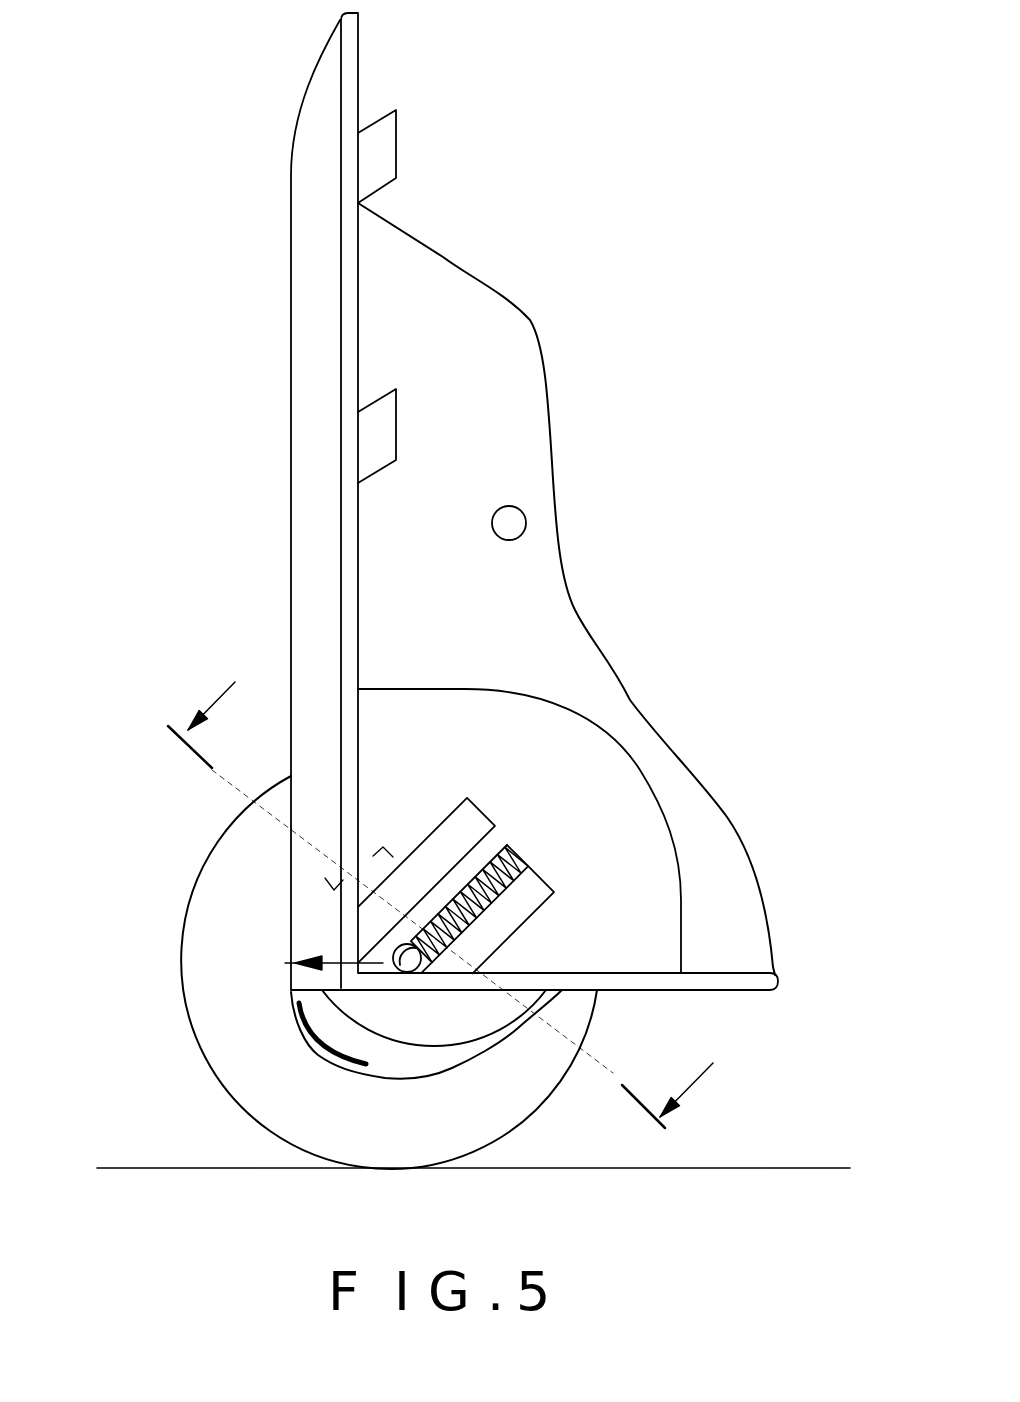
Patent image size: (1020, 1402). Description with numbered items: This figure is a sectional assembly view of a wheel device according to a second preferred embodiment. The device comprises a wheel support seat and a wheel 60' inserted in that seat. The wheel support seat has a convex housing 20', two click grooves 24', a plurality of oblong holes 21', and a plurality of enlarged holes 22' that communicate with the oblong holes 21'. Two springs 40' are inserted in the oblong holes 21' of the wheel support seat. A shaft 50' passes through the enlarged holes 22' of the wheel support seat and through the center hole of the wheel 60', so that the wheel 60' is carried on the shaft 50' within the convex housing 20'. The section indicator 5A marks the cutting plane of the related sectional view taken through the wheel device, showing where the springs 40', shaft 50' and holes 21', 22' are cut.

The convex housing 20' is at (531, 546).
The oblong holes 21' is at (480, 867).
The enlarged holes 22' is at (391, 989).
The click grooves 24' is at (507, 908).
The springs 40' is at (412, 866).
The shaft 50' is at (432, 994).
The wheel 60' is at (349, 972).
The section line 5A is at (461, 884).